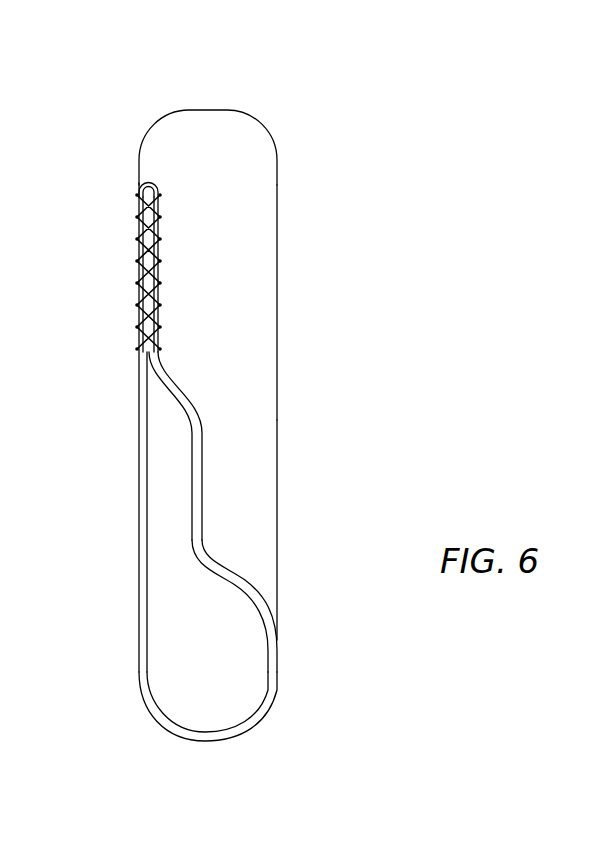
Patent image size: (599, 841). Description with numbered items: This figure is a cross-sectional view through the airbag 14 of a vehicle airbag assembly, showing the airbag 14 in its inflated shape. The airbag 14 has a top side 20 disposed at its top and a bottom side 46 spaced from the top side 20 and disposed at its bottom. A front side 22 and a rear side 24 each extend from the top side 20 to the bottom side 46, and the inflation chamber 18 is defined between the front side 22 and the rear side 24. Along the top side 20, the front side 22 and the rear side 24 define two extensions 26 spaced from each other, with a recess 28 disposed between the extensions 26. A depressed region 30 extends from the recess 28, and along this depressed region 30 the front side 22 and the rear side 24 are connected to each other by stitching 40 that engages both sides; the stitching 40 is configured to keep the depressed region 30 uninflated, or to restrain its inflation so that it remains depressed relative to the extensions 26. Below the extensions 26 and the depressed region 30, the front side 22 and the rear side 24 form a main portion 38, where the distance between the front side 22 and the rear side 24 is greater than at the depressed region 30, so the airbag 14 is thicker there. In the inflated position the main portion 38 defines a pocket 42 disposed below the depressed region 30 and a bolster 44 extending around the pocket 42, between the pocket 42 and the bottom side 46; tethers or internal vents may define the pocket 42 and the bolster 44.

The airbag 14 is at (387, 263).
The inflation chamber 18 is at (197, 667).
The top side 20 is at (232, 101).
The front side 22 is at (309, 470).
The rear side 24 is at (101, 447).
The extensions 26 is at (245, 111).
The recess 28 is at (148, 172).
The depressed region 30 is at (137, 254).
The stitching 40 is at (137, 301).
The pocket 42 is at (203, 486).
The bolster 44 is at (277, 660).
The bottom side 46 is at (170, 745).
The main portion 38 is at (299, 612).